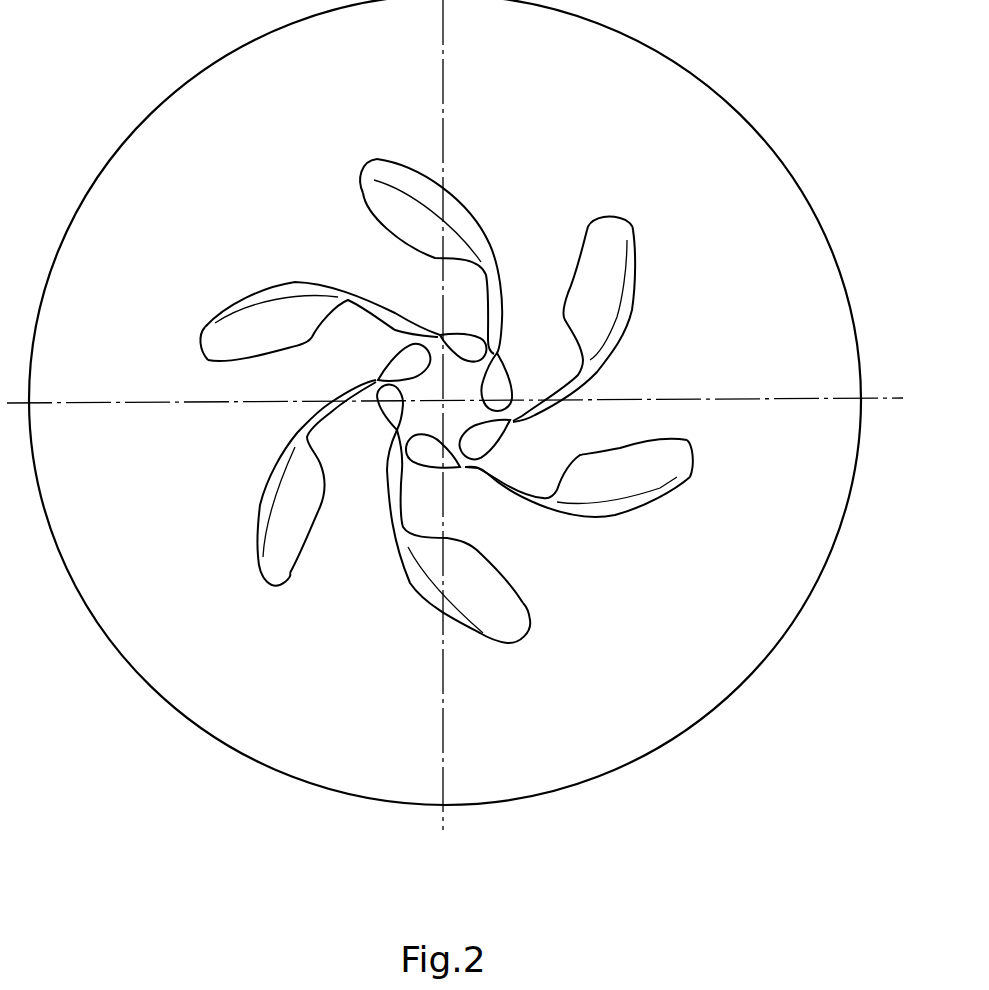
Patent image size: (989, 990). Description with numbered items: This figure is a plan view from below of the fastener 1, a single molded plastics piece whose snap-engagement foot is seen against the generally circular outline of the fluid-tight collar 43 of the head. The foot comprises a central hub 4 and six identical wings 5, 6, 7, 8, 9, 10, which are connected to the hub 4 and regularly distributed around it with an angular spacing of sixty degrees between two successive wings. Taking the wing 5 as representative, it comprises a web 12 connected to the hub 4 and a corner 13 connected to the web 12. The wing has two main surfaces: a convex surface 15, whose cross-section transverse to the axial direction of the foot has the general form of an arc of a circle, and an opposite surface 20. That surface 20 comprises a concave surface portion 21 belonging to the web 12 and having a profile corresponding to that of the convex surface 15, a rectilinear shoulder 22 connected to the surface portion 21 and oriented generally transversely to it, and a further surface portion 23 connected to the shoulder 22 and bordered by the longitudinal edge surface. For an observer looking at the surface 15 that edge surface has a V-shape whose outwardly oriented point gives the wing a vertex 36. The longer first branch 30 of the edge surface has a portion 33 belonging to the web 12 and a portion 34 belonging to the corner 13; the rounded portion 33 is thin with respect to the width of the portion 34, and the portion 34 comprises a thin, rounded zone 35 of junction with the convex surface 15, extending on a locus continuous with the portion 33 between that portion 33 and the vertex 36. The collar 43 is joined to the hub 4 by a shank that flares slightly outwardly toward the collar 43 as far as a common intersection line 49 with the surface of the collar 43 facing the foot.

The fastener 1 is at (198, 812).
The hub 4 is at (433, 413).
The wing 5 is at (463, 181).
The wing 6 is at (275, 272).
The wing 7 is at (253, 490).
The wing 8 is at (418, 605).
The wing 9 is at (657, 513).
The wing 10 is at (642, 268).
The web 12 is at (505, 303).
The corner 13 is at (372, 182).
The convex surface 15 is at (428, 166).
The surface 20 is at (308, 348).
The surface portion 21 is at (487, 312).
The rectilinear shoulder 22 is at (466, 263).
The surface portion 23 is at (386, 227).
The first branch 30 is at (282, 551).
The portion 33 is at (363, 385).
The portion 34 is at (281, 488).
The thin zone 35 is at (274, 463).
The vertex 36 is at (375, 159).
The fluid-tight collar 43 is at (210, 78).
The common intersection line 49 is at (512, 373).